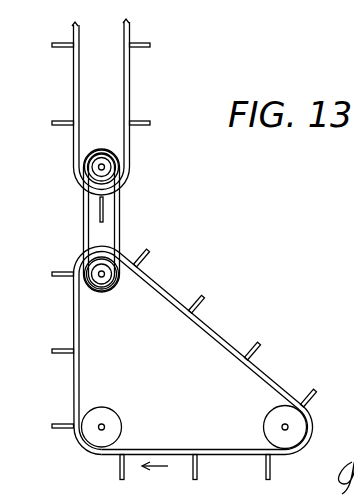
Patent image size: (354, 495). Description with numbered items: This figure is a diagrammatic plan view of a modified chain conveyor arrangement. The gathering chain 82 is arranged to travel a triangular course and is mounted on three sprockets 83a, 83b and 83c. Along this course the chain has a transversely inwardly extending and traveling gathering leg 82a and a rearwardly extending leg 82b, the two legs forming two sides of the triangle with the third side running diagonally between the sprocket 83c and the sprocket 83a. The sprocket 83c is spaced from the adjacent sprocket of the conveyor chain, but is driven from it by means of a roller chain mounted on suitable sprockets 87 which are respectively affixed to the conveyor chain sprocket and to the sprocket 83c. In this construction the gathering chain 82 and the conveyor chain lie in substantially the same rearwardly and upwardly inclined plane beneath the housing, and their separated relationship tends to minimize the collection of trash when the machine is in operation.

The gathering chain 82 is at (234, 347).
The gathering leg 82a is at (215, 449).
The rearwardly extending leg 82b is at (80, 358).
The sprocket 83a is at (273, 422).
The sprocket 83b is at (111, 414).
The sprocket 83c is at (118, 283).
The sprockets 87 is at (99, 280).